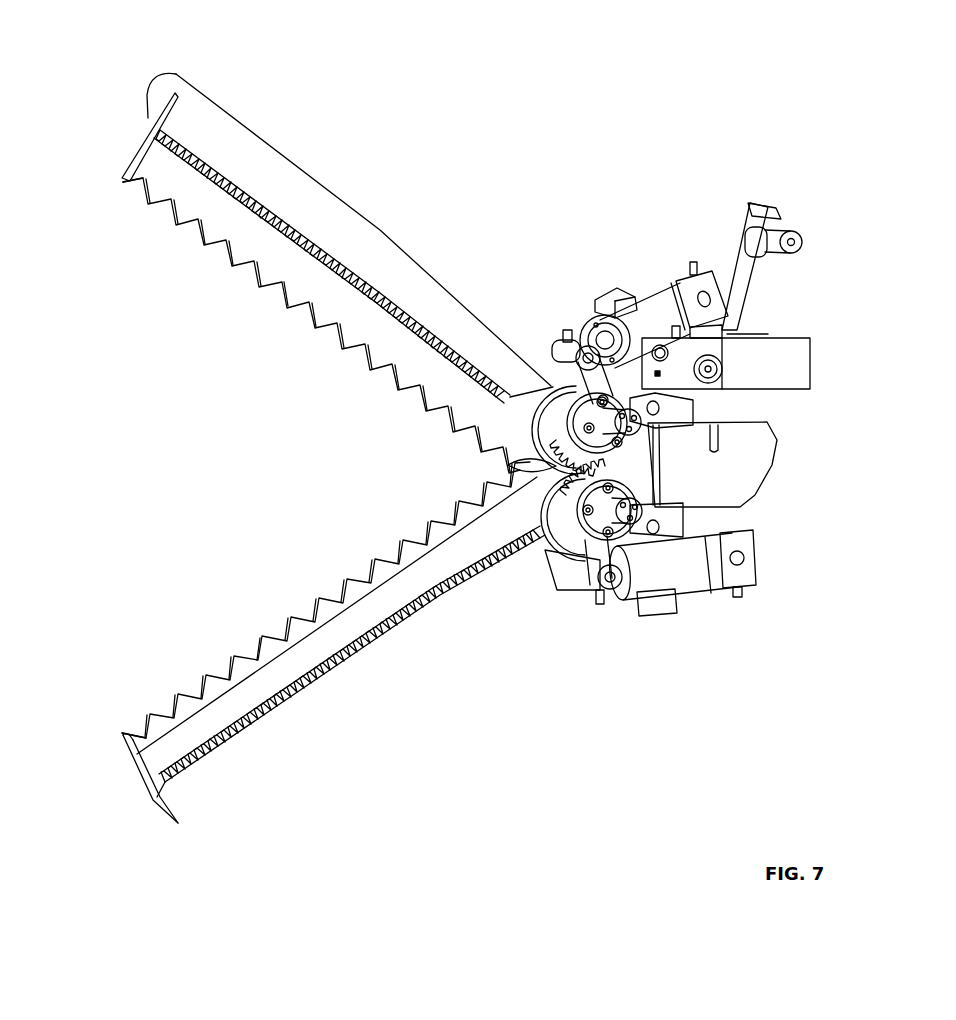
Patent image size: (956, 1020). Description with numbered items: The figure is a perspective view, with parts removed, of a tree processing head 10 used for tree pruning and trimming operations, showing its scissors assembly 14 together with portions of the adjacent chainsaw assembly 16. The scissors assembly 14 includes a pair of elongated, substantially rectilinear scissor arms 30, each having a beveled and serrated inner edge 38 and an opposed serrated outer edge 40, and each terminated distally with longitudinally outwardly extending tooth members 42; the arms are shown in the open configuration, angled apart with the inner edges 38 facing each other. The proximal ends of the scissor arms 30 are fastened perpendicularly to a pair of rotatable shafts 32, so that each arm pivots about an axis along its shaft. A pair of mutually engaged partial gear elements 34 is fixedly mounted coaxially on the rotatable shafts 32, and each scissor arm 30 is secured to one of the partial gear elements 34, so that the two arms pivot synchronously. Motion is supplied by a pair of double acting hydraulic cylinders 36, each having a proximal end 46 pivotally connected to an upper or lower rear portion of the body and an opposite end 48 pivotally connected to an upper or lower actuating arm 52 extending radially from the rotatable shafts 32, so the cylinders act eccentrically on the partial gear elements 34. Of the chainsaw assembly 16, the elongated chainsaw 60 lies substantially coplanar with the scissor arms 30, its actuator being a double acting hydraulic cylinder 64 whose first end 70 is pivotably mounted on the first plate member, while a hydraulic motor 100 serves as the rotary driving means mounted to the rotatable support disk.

The tree processing head 10 is at (294, 390).
The scissors assembly 14 is at (284, 620).
The chainsaw assembly 16 is at (357, 203).
The scissor arms 30 is at (222, 251).
The rotatable shafts 32 is at (643, 514).
The partial gear elements 34 is at (551, 388).
The double acting hydraulic cylinders 36 is at (646, 292).
The inner edge 38 is at (200, 219).
The outer edge 40 is at (300, 228).
The tooth members 42 is at (133, 150).
The proximal end 46 is at (681, 280).
The opposite end 48 is at (580, 335).
The actuating arm 52 is at (556, 384).
The chainsaw 60 is at (261, 155).
The double acting hydraulic cylinder 64 is at (727, 293).
The first end 70 is at (782, 227).
The hydraulic motor 100 is at (748, 467).